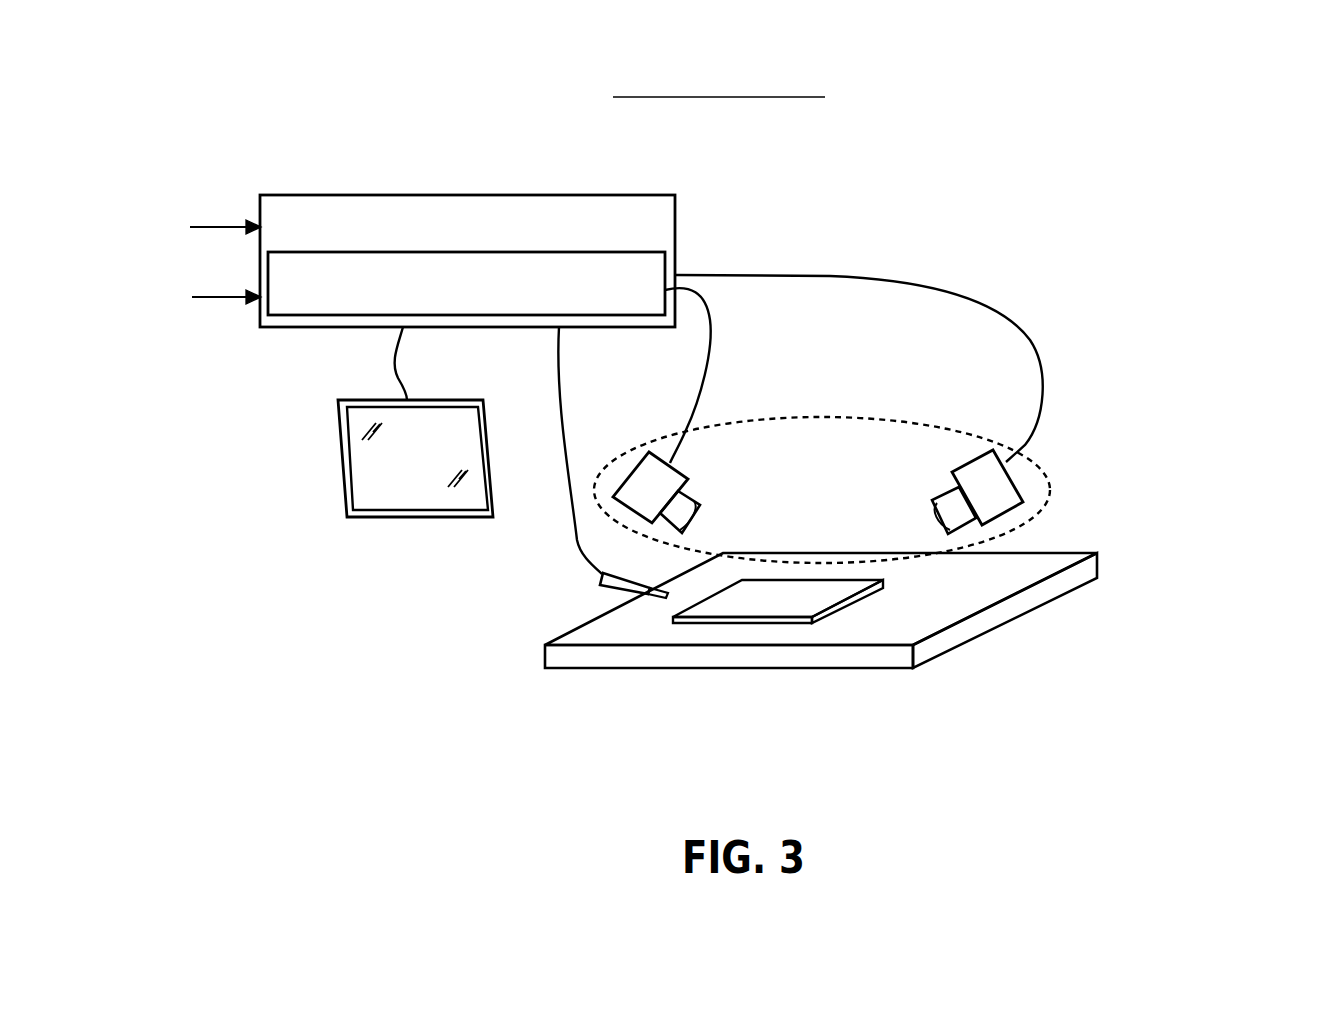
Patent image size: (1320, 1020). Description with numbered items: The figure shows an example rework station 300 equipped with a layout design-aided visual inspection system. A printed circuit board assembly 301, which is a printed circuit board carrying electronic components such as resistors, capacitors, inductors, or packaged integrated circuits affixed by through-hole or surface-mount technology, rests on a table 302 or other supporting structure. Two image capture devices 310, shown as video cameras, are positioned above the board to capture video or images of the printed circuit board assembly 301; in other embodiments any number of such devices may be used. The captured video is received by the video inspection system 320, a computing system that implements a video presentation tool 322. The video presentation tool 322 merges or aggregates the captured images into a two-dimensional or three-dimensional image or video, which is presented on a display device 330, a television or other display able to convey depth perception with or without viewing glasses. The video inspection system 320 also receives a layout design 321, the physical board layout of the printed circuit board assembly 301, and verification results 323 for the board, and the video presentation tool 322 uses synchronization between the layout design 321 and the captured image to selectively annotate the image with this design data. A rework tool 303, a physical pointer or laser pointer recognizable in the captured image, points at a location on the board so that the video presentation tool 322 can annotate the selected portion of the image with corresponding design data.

The rework station 300 is at (1103, 169).
The video inspection system 320 is at (467, 261).
The video presentation tool 322 is at (466, 283).
The layout design 321 is at (149, 227).
The verification results 323 is at (138, 296).
The display device 330 is at (342, 454).
The image capture devices 310 is at (1045, 478).
The table 302 is at (1093, 559).
The printed circuit board assembly 301 is at (832, 615).
The rework tool 303 is at (607, 591).